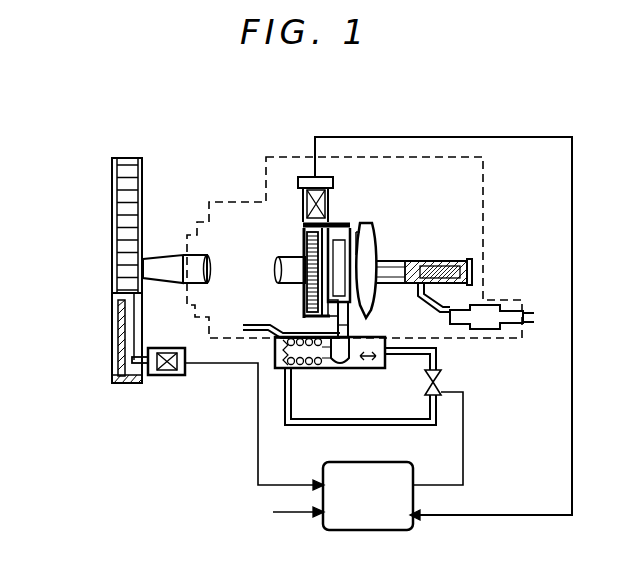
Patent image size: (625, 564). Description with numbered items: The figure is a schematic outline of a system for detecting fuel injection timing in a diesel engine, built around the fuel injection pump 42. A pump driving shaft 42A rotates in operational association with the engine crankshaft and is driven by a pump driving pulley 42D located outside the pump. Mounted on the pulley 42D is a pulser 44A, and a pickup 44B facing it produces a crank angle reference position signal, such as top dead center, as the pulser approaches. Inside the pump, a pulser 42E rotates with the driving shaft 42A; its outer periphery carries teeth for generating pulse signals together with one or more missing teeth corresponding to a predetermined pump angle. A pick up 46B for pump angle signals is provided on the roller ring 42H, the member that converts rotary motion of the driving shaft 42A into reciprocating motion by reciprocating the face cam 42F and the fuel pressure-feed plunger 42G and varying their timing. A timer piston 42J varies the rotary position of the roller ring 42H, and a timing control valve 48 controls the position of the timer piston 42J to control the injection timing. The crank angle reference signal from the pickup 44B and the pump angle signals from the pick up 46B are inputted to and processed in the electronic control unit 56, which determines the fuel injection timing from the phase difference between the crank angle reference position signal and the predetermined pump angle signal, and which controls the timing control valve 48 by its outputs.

The injection pump 42 is at (266, 157).
The pump driving shaft 42A is at (165, 255).
The pump driving pulley 42D is at (113, 160).
The pulser 42E is at (305, 248).
The face cam 42F is at (372, 228).
The plunger 42G is at (393, 261).
The roller ring 42H is at (307, 318).
The timer piston 42J is at (330, 368).
The pulser 44A is at (147, 383).
The pickup 44B is at (178, 375).
The pick up 46B is at (332, 216).
The timing control valve 48 is at (440, 378).
The electronic control unit 56 is at (365, 462).